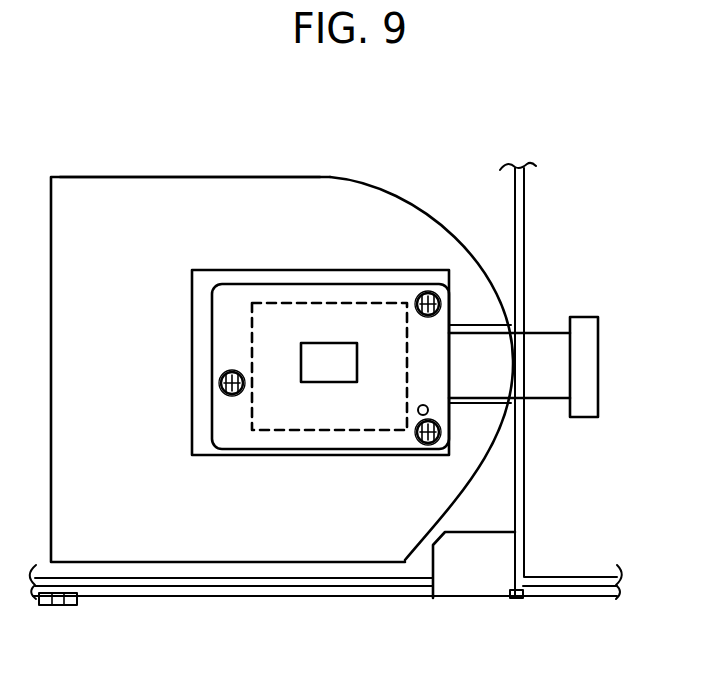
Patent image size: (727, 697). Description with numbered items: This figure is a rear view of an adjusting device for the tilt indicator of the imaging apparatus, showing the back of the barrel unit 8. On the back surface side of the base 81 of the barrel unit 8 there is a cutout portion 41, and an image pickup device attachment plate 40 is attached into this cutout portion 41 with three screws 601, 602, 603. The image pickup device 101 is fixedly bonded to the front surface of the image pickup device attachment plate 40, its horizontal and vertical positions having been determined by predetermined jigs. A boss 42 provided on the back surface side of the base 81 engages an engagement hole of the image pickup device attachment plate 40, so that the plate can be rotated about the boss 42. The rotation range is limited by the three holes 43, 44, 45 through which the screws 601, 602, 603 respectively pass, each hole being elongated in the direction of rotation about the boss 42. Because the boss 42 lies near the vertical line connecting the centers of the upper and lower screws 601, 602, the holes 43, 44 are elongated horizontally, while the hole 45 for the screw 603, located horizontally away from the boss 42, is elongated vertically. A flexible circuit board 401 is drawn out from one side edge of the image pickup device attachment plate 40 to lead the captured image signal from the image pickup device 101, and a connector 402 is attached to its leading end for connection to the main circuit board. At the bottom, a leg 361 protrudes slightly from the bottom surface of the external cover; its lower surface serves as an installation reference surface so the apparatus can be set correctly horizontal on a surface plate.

The barrel unit 8 is at (116, 150).
The base 81 is at (186, 178).
The cutout portion 41 is at (238, 279).
The image pickup device attachment plate 40 is at (287, 293).
The image pickup device 101 is at (341, 301).
The screw 601 is at (427, 294).
The screw 602 is at (425, 446).
The screw 603 is at (221, 378).
The hole 43 is at (443, 304).
The hole 44 is at (444, 433).
The hole 45 is at (221, 395).
The boss 42 is at (423, 404).
The flexible circuit board 401 is at (560, 337).
The connector 402 is at (590, 367).
The leg 361 is at (59, 607).